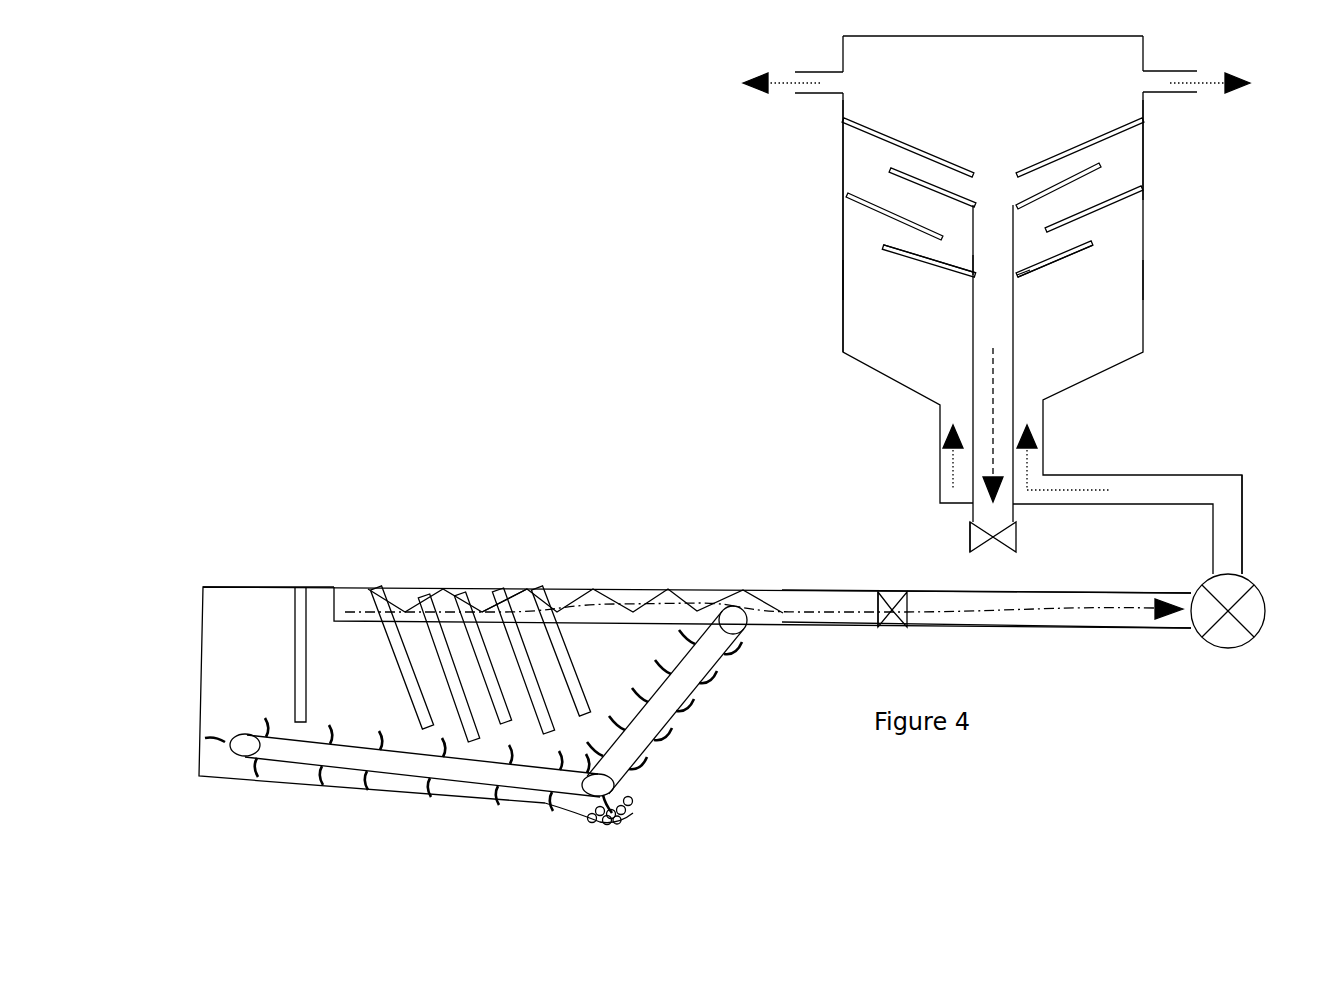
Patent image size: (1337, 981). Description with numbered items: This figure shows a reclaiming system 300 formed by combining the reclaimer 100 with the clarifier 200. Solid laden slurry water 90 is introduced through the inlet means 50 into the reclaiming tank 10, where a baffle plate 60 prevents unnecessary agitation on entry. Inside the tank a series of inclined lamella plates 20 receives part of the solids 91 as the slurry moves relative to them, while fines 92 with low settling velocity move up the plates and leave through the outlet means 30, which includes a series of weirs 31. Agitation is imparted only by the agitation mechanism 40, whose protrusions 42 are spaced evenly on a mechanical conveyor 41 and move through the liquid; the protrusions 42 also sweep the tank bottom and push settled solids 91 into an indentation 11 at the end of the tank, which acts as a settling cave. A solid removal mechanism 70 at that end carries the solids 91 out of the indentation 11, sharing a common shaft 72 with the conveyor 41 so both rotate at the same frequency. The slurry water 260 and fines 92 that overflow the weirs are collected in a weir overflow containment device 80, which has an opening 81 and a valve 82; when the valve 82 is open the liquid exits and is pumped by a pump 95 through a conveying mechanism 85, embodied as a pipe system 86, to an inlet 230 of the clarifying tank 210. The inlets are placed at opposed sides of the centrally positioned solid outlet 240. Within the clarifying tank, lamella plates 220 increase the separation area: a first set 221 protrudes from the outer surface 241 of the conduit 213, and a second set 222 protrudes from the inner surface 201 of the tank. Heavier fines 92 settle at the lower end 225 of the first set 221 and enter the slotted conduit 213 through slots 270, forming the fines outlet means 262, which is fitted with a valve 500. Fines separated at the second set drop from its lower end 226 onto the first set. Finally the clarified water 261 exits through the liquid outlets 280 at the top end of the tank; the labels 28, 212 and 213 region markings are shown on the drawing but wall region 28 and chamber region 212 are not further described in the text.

The reclaiming tank 10 is at (198, 712).
The indentation 11 is at (570, 825).
The lamella plates 20 is at (397, 667).
The tank wall 28 is at (1170, 150).
The outlet means 30 is at (408, 540).
The weirs 31 is at (505, 587).
The agitation mechanism 40 is at (380, 807).
The mechanical conveyor 41 is at (280, 778).
The protrusions 42 is at (547, 808).
The inlet means 50 is at (238, 585).
The baffle plate 60 is at (303, 585).
The solid removal mechanism 70 is at (727, 735).
The shaft 72 is at (614, 781).
The weir overflow containment device 80 is at (790, 590).
The opening 81 is at (880, 592).
The valve 82 is at (893, 623).
The conveying mechanism 85 is at (1102, 628).
The pipe system 86 is at (1248, 543).
The solid laden slurry water 90 is at (238, 522).
The solids 91 is at (617, 818).
The fines 92 is at (839, 640).
The pump 95 is at (1247, 645).
The reclaimer 100 is at (597, 565).
The clarifier 200 is at (1190, 368).
The inner surface 201 is at (1142, 238).
The clarifying tank 210 is at (830, 340).
The chamber 212 is at (993, 280).
The conduit 213 is at (993, 194).
The lamella plates 220 is at (1103, 165).
The first set of lamella plates 221 is at (934, 268).
The second set of lamella plates 222 is at (987, 253).
The lower end 225 is at (1020, 265).
The lower end 226 is at (994, 213).
The inlet 230 is at (1078, 499).
The solid outlet 240 is at (993, 549).
The outer surface 241 is at (973, 314).
The slurry water 260 is at (1128, 508).
The clarified water 261 is at (999, 86).
The fines outlet means 262 is at (997, 410).
The slots 270 is at (1012, 265).
The liquid outlet 280 is at (805, 96).
The reclaiming system 300 is at (480, 380).
The valve 500 is at (968, 540).